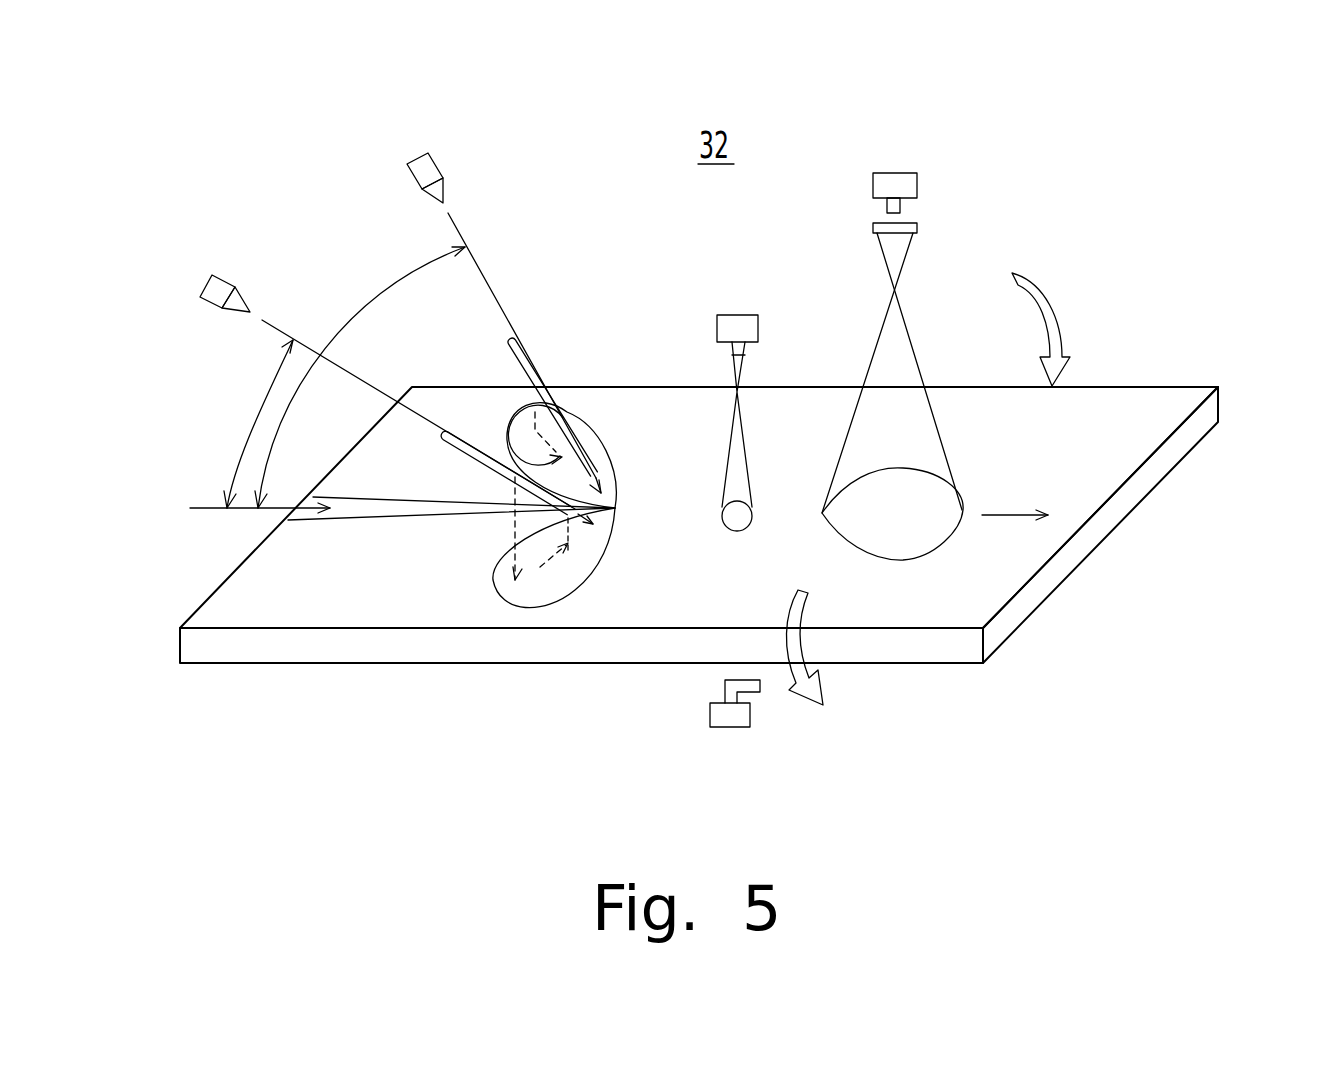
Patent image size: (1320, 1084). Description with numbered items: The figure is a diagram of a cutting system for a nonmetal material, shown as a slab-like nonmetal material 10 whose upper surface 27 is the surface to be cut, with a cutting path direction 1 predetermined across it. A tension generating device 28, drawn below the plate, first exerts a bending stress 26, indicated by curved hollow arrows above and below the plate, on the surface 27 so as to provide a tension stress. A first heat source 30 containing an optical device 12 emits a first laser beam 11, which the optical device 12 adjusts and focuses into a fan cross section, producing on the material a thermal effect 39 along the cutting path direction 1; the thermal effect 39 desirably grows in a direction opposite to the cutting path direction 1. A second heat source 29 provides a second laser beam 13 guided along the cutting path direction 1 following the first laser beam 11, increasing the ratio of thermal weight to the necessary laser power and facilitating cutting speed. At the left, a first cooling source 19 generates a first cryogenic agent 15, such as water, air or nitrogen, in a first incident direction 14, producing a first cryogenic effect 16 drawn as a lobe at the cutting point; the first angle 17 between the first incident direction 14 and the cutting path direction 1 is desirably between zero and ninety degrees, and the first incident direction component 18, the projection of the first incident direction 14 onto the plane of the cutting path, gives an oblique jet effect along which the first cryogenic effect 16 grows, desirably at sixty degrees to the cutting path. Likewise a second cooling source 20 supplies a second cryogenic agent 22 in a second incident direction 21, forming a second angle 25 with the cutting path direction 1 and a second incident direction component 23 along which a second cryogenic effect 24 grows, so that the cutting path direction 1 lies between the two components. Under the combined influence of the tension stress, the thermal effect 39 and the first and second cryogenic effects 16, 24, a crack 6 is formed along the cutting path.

The cutting path direction 1 is at (190, 508).
The crack 6 is at (397, 516).
The nonmetal material 10 is at (255, 670).
The first laser beam 11 is at (923, 374).
The optical device 12 is at (920, 230).
The second laser beam 13 is at (748, 452).
The first incident direction 14 is at (487, 282).
The first cryogenic agent 15 is at (545, 368).
The first cryogenic effect 16 is at (612, 474).
The first angle 17 is at (373, 300).
The first incident direction component 18 is at (507, 425).
The first cooling source 19 is at (445, 162).
The second cooling source 20 is at (205, 283).
The second incident direction 21 is at (382, 390).
The second cryogenic agent 22 is at (478, 464).
The second incident direction component 23 is at (540, 567).
The second cryogenic effect 24 is at (597, 560).
The second angle 25 is at (242, 440).
The bending stress 26 is at (1048, 282).
The surface 27 is at (1153, 398).
The tension generating device 28 is at (710, 718).
The second heat source 29 is at (735, 315).
The first heat source 30 is at (917, 183).
The thermal effect 39 is at (935, 540).